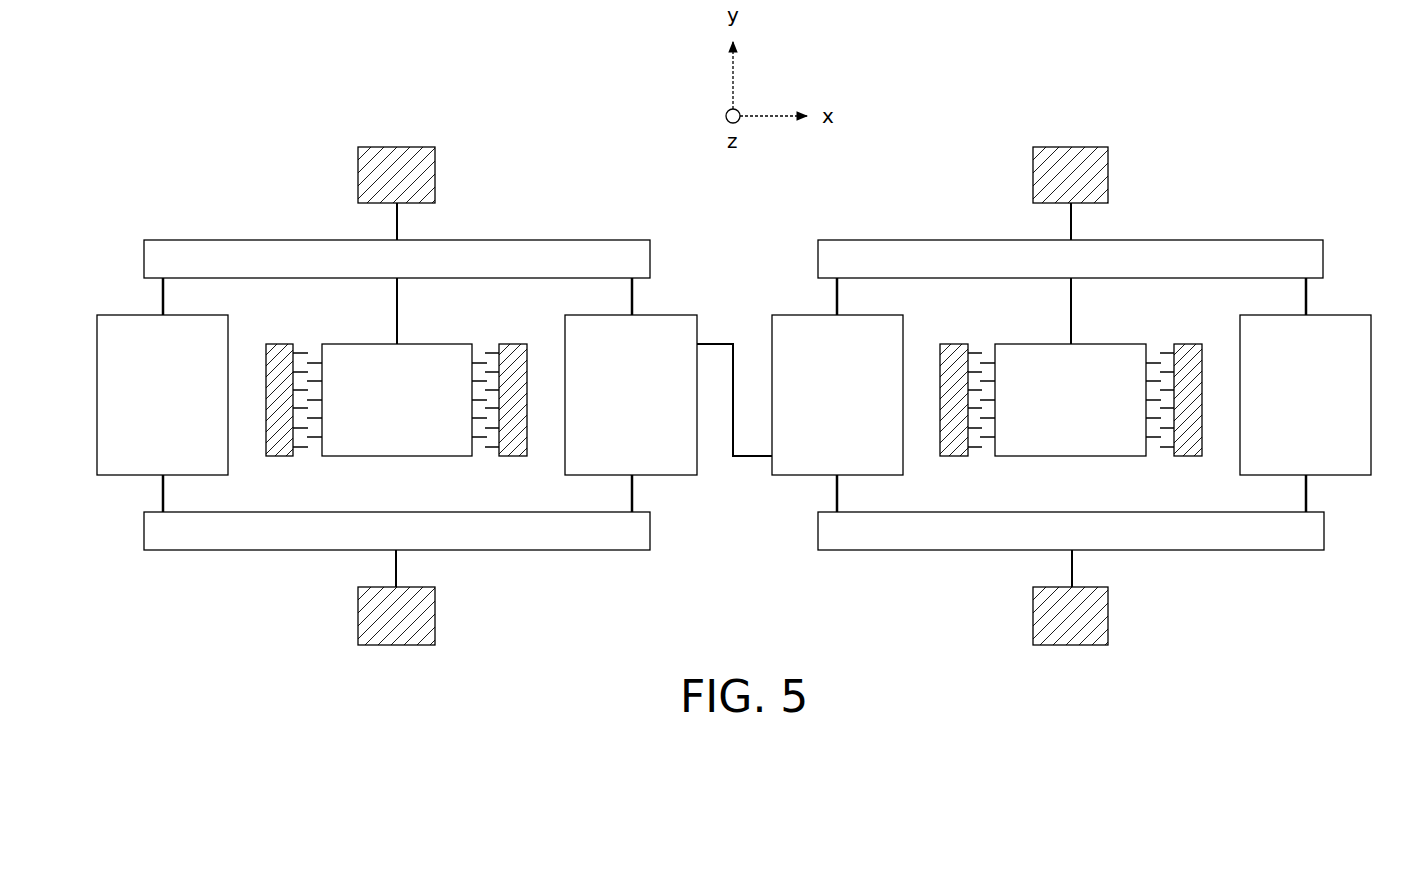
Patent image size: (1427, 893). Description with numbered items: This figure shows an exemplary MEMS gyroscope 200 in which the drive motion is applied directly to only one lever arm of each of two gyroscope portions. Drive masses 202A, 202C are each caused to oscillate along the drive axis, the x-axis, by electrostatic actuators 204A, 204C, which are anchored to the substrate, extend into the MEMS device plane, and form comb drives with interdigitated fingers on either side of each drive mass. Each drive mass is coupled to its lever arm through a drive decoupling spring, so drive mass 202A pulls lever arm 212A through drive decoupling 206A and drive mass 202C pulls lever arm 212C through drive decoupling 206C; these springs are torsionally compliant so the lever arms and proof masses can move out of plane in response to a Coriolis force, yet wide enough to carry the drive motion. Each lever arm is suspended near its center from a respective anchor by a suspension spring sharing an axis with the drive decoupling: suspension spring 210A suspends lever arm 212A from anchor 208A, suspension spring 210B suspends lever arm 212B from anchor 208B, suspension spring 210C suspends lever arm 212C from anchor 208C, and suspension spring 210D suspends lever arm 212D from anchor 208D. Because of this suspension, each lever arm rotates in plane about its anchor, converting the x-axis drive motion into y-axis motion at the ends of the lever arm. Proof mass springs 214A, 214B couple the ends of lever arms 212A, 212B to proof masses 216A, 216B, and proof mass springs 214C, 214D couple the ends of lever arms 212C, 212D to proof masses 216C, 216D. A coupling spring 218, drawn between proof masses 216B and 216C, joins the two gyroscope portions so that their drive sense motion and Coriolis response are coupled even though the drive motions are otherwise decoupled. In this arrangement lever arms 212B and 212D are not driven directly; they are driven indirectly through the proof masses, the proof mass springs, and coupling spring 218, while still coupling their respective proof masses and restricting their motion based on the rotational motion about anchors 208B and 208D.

The MEMS device 200 is at (290, 642).
The drive mass 202A is at (400, 458).
The drive mass 202C is at (1071, 458).
The electrostatic actuator 204A is at (279, 460).
The electrostatic actuator 204C is at (953, 460).
The drive decoupling 206A is at (394, 305).
The drive decoupling 206C is at (1075, 305).
The anchor 208A is at (439, 178).
The anchor 208B is at (439, 612).
The anchor 208C is at (1112, 178).
The anchor 208D is at (1112, 612).
The suspension spring 210A is at (401, 228).
The suspension spring 210B is at (400, 568).
The suspension spring 210C is at (1075, 226).
The suspension spring 210D is at (1076, 568).
The lever arm 212A is at (193, 240).
The lever arm 212B is at (197, 550).
The lever arm 212C is at (1293, 240).
The lever arm 212D is at (1290, 550).
The proof mass spring 214A is at (160, 300).
The proof mass spring 214B is at (629, 300).
The proof mass spring 214C is at (840, 300).
The proof mass spring 214D is at (1309, 300).
The proof mass 216A is at (162, 395).
The proof mass 216B is at (631, 395).
The proof mass 216C is at (837, 395).
The proof mass 216D is at (1305, 395).
The coupling spring 218 is at (733, 322).